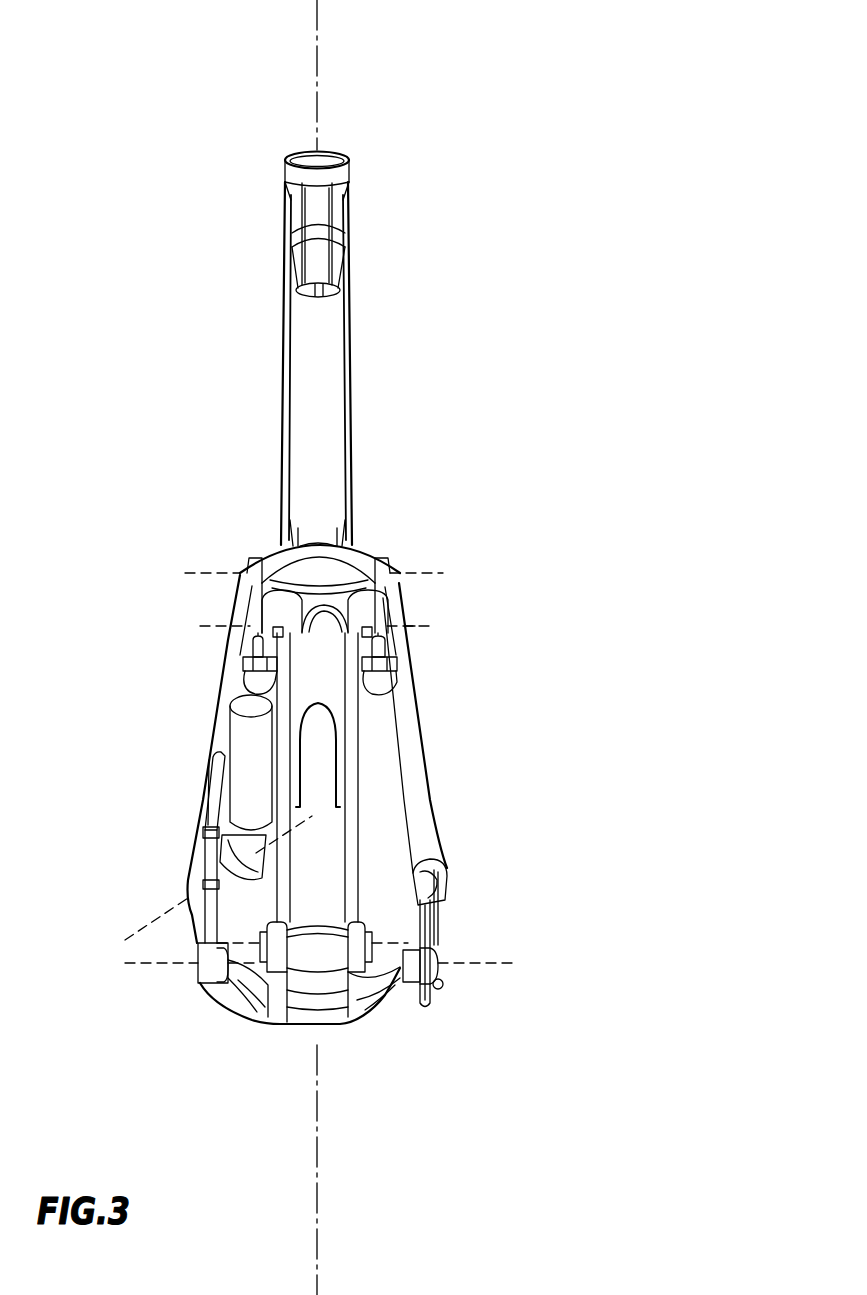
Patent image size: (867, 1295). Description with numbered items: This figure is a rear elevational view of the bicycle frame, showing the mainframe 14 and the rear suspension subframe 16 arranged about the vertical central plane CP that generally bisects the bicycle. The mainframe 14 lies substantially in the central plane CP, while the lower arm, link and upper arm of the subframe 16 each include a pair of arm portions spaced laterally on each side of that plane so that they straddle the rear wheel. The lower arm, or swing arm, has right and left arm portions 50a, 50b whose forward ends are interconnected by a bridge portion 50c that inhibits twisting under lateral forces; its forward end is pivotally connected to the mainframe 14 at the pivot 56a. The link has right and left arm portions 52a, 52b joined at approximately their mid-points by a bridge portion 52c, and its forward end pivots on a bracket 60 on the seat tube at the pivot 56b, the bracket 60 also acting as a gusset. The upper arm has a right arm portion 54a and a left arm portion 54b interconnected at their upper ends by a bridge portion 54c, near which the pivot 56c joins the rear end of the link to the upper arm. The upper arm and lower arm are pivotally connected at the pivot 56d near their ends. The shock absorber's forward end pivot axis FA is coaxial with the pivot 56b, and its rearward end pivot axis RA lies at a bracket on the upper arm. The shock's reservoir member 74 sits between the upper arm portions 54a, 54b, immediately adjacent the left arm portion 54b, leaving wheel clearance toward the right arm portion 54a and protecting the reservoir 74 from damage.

The mainframe 14 is at (342, 333).
The subframe 16 is at (543, 807).
The right arm portion of lower arm 50a is at (392, 1015).
The left arm portion of lower arm 50b is at (222, 993).
The bridge portion of lower arm 50c is at (318, 1025).
The right arm portion of link 52a is at (400, 608).
The left arm portion of link 52b is at (242, 614).
The bridge portion of link 52c is at (293, 602).
The right arm portion of upper arm 54a is at (428, 760).
The left arm portion of upper arm 54b is at (228, 686).
The bridge portion of upper arm 54c is at (352, 546).
The pivot between lower arm and mainframe 56a is at (388, 945).
The pivot between link and mainframe 56b is at (428, 627).
The pivot between link and upper arm 56c is at (428, 572).
The pivot between upper arm and lower arm 56d is at (490, 963).
The bracket 60 is at (335, 707).
The reservoir member 74 is at (228, 741).
The forward end pivot axis FA is at (417, 627).
The rearward end pivot axis RA is at (140, 930).
The central plane CP is at (318, 1118).